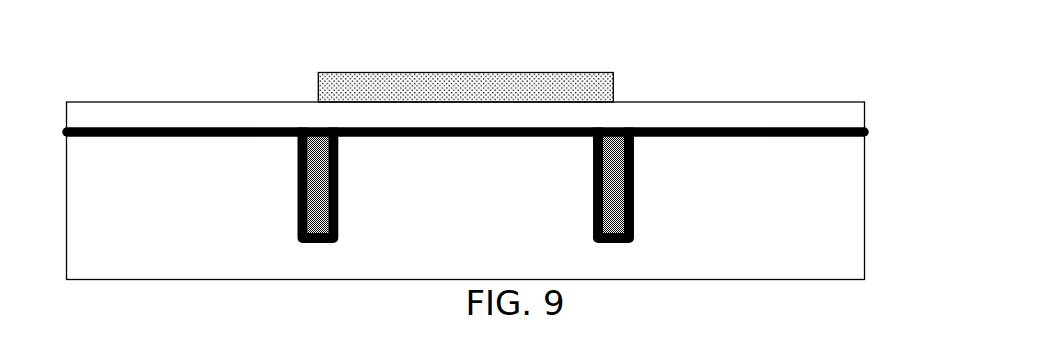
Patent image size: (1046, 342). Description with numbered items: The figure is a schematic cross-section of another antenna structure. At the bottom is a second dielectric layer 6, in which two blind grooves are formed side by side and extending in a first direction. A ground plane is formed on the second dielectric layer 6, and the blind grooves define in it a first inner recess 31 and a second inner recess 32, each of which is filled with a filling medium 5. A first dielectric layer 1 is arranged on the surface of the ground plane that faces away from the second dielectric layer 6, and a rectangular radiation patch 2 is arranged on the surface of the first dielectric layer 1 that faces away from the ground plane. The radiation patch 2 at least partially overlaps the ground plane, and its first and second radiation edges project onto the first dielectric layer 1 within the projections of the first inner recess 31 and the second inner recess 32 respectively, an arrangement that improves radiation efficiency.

The first dielectric layer 1 is at (843, 114).
The radiation patch 2 is at (558, 97).
The first inner recess 31 is at (338, 157).
The second inner recess 32 is at (634, 162).
The filling medium 5 is at (317, 192).
The second dielectric layer 6 is at (843, 218).